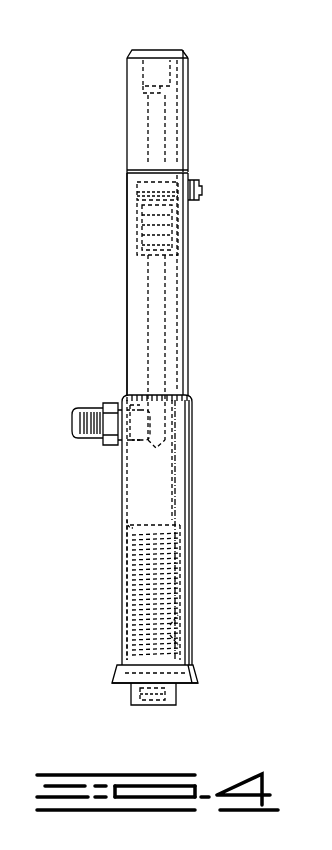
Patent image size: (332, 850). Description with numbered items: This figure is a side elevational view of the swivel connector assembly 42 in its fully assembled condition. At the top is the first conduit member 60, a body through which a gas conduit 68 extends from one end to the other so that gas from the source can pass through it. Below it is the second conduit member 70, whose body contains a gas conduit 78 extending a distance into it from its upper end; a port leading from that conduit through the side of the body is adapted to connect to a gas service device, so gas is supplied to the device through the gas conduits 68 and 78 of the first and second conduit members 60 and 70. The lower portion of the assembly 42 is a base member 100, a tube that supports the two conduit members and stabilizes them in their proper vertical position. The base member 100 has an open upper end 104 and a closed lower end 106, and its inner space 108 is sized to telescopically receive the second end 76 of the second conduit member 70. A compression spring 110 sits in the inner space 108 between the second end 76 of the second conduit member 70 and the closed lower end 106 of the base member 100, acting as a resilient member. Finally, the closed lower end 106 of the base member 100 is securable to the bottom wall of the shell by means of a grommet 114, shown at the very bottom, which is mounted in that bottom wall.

The swivel connector assembly 42 is at (205, 310).
The first conduit member 60 is at (190, 125).
The gas conduit 68 is at (148, 140).
The second conduit member 70 is at (190, 280).
The gas conduit 78 is at (152, 333).
The open upper end 104 is at (192, 397).
The second end 76 is at (172, 503).
The inner space 108 is at (122, 545).
The base member 100 is at (192, 562).
The compression spring 110 is at (185, 592).
The closed lower end 106 is at (195, 653).
The grommet 114 is at (198, 675).